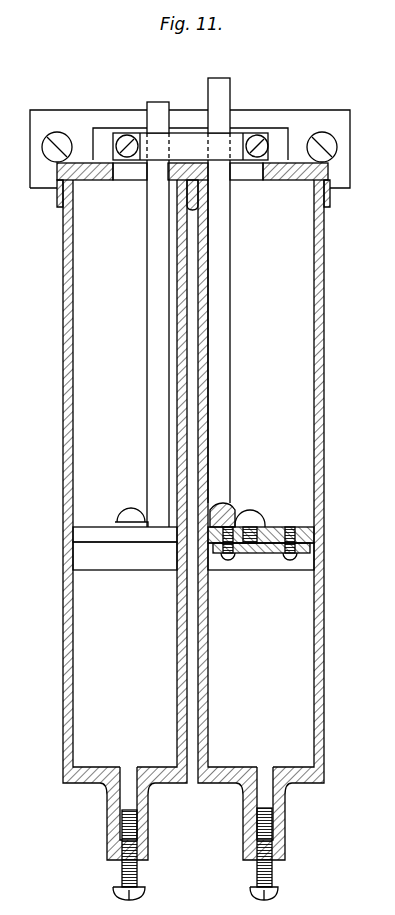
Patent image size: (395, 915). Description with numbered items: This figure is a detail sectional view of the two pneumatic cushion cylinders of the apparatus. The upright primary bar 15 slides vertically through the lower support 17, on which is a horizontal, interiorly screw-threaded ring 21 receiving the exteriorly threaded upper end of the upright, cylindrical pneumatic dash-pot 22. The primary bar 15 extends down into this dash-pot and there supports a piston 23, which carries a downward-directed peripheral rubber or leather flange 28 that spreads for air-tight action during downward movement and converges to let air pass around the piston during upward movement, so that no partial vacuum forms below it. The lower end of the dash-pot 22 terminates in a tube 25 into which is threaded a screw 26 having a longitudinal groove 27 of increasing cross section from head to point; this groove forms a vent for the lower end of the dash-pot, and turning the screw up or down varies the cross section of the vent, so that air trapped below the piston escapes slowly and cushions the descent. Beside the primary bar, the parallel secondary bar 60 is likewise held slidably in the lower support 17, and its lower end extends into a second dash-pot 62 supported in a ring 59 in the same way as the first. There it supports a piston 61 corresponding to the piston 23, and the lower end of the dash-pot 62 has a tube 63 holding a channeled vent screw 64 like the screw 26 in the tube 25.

The primary bar 15 is at (227, 316).
The lower support 17 is at (272, 132).
The interiorly screw-threaded ring 21 is at (330, 195).
The pneumatic dash-pot 22 is at (322, 327).
The piston 23 is at (273, 528).
The tube 25 is at (287, 810).
The screw 26 is at (273, 875).
The longitudinal groove 27 is at (264, 830).
The peripheral flange 28 is at (127, 558).
The ring 59 is at (55, 200).
The secondary bar 60 is at (153, 357).
The piston 61 is at (99, 533).
The dash-pot 62 is at (67, 394).
The tube 63 is at (110, 805).
The channeled vent screw 64 is at (122, 875).